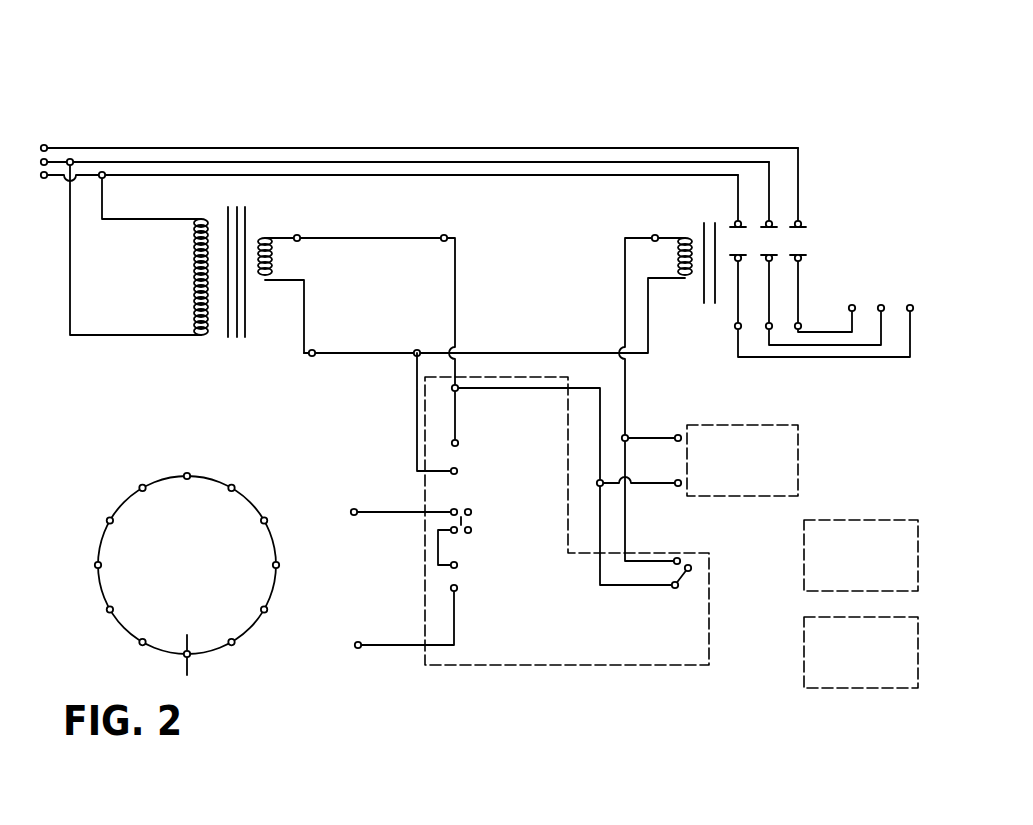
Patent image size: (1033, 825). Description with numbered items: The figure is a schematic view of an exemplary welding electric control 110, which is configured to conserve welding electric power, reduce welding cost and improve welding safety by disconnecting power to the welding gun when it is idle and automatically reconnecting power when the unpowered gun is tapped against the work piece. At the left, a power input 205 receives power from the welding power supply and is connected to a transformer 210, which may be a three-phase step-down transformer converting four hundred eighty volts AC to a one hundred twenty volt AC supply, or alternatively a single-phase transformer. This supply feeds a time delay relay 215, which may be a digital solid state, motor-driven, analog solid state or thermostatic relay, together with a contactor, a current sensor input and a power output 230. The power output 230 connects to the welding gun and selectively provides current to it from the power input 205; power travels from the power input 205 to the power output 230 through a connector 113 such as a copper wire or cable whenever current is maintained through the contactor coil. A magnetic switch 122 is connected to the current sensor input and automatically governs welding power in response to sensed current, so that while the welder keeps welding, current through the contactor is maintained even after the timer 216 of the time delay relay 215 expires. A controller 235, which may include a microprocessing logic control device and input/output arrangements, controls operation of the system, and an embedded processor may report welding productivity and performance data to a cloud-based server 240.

The welding electric control 110 is at (364, 106).
The connector 113 is at (532, 132).
The power input 205 is at (41, 198).
The transformer 210 is at (188, 205).
The timer 216 is at (104, 470).
The time delay relay 215 is at (660, 665).
The magnetic switch 122 is at (742, 460).
The power output 230 is at (872, 270).
The controller 235 is at (861, 555).
The server 240 is at (861, 652).